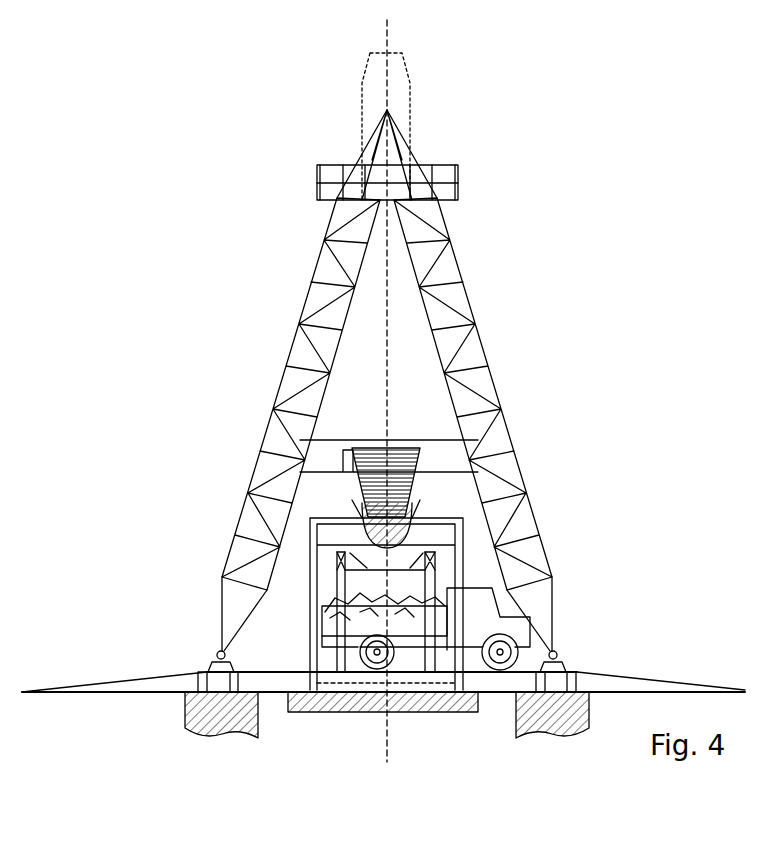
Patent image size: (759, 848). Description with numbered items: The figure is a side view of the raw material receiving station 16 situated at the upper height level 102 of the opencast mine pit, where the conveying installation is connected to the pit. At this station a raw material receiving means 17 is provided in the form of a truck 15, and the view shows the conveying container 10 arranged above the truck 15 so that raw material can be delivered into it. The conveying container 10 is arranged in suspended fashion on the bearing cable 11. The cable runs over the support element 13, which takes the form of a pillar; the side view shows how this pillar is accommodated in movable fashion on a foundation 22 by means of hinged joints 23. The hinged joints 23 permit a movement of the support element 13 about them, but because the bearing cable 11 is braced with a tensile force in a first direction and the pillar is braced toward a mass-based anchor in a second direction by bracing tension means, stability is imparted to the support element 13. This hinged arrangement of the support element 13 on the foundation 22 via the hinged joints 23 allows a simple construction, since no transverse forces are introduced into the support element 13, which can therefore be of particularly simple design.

The conveying container 10 is at (410, 488).
The bearing cable 11 is at (388, 272).
The support element 13 is at (430, 135).
The truck 15 is at (502, 610).
The raw material receiving station 16 is at (298, 637).
The raw material receiving means 17 is at (475, 582).
The foundation 22 is at (312, 713).
The hinged joints 23 is at (556, 655).
The upper height level 102 is at (105, 737).